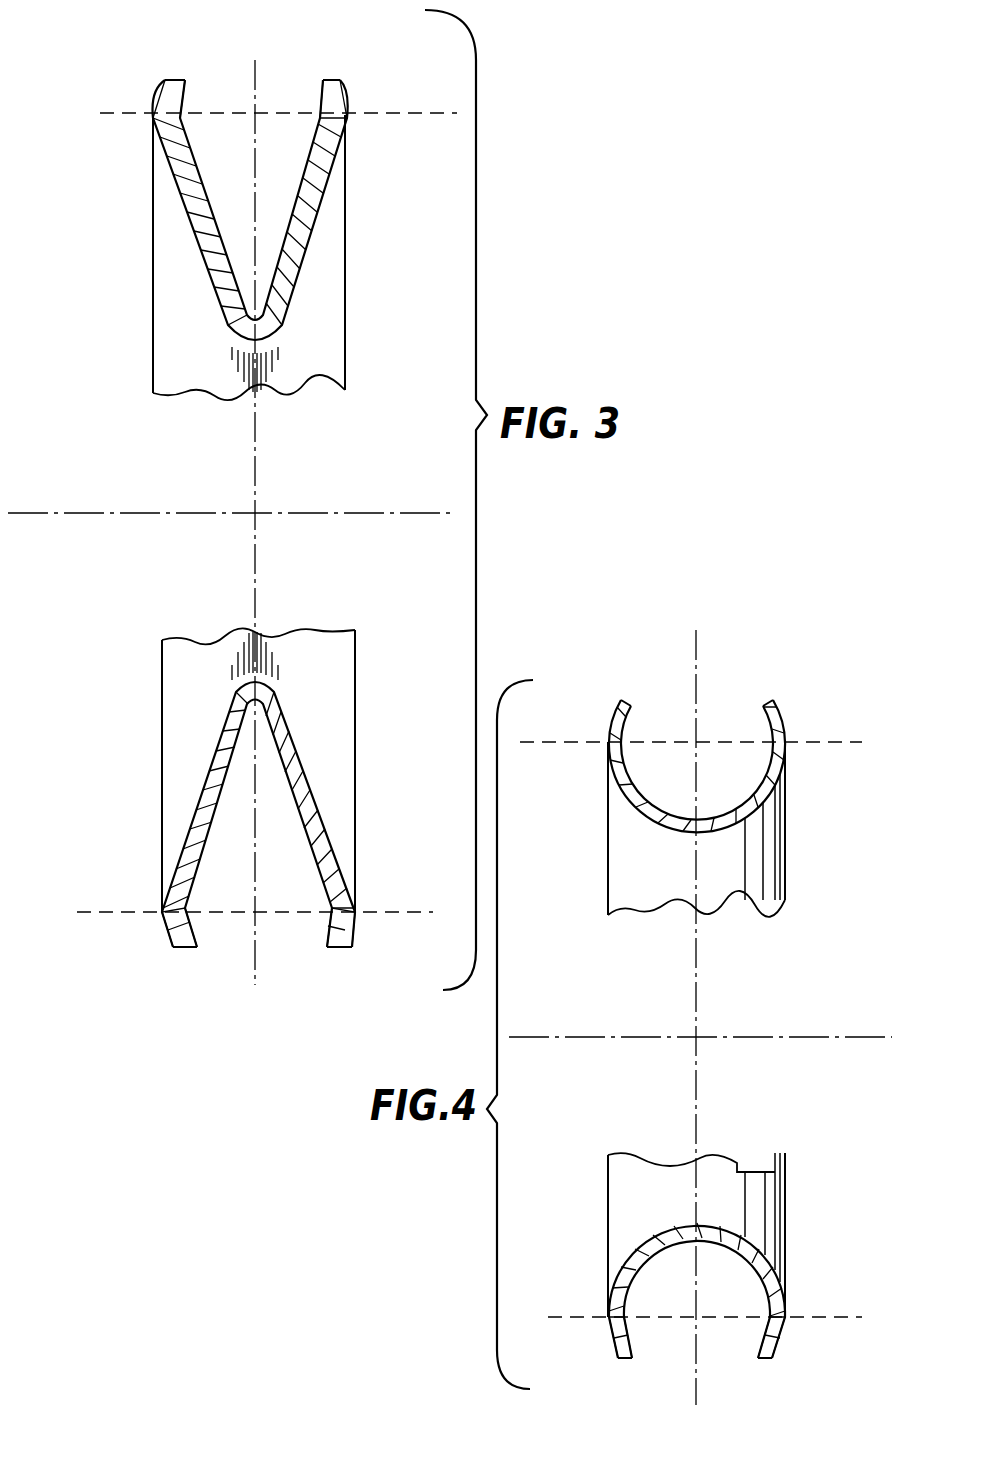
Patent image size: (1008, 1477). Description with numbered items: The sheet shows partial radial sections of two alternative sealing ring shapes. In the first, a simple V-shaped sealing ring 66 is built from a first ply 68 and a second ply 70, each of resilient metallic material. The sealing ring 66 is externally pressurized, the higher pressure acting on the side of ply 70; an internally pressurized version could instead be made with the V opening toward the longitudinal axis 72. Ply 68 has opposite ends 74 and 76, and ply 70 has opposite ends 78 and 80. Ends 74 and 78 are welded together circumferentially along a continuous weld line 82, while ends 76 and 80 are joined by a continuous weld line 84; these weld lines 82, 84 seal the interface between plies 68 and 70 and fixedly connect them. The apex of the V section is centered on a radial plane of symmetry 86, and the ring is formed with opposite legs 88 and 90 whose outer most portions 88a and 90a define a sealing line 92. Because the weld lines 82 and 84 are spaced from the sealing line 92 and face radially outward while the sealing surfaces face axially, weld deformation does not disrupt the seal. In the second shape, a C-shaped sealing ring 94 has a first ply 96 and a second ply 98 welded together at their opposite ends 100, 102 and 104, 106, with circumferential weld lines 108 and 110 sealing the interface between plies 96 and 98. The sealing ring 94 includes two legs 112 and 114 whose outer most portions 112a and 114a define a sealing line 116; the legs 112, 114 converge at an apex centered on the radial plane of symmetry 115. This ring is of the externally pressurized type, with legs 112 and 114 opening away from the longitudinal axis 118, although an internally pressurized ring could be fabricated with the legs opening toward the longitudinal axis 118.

In FIG. 3, the V-shaped sealing ring 66 is at (281, 172).
In FIG. 3, the first ply 68 is at (197, 235).
In FIG. 3, the second ply 70 is at (280, 222).
In FIG. 3, the longitudinal axis 72 is at (380, 513).
In FIG. 3, the end of first ply 74 is at (163, 82).
In FIG. 3, the end of first ply 76 is at (338, 80).
In FIG. 3, the end of second ply 78 is at (183, 80).
In FIG. 3, the end of second ply 80 is at (323, 80).
In FIG. 3, the weld line 82 is at (165, 80).
In FIG. 3, the weld line 84 is at (327, 78).
In FIG. 3, the radial plane of symmetry 86 is at (262, 831).
In FIG. 3, the leg 88 is at (192, 813).
In FIG. 3, the outer most portion of leg 88a is at (160, 913).
In FIG. 3, the leg 90 is at (317, 783).
In FIG. 3, the outer most portion of leg 90a is at (360, 913).
In FIG. 3, the sealing line 92 is at (90, 913).
In FIG. 4, the C-shaped sealing ring 94 is at (697, 730).
In FIG. 4, the first ply 96 is at (623, 800).
In FIG. 4, the second ply 98 is at (753, 770).
In FIG. 4, the end of ply 100 is at (625, 700).
In FIG. 4, the end of ply 102 is at (630, 712).
In FIG. 4, the end of ply 104 is at (765, 705).
In FIG. 4, the end of ply 106 is at (785, 700).
In FIG. 4, the circumferential weld line 108 is at (623, 707).
In FIG. 4, the circumferential weld line 110 is at (768, 704).
In FIG. 4, the leg 112 is at (627, 1268).
In FIG. 4, the outer most portion of leg 112a is at (605, 1328).
In FIG. 4, the leg 114 is at (783, 1253).
In FIG. 4, the outer most portion of leg 114a is at (775, 1330).
In FIG. 4, the radial plane of symmetry 115 is at (690, 1318).
In FIG. 4, the sealing line 116 is at (548, 1317).
In FIG. 4, the longitudinal axis 118 is at (583, 1037).